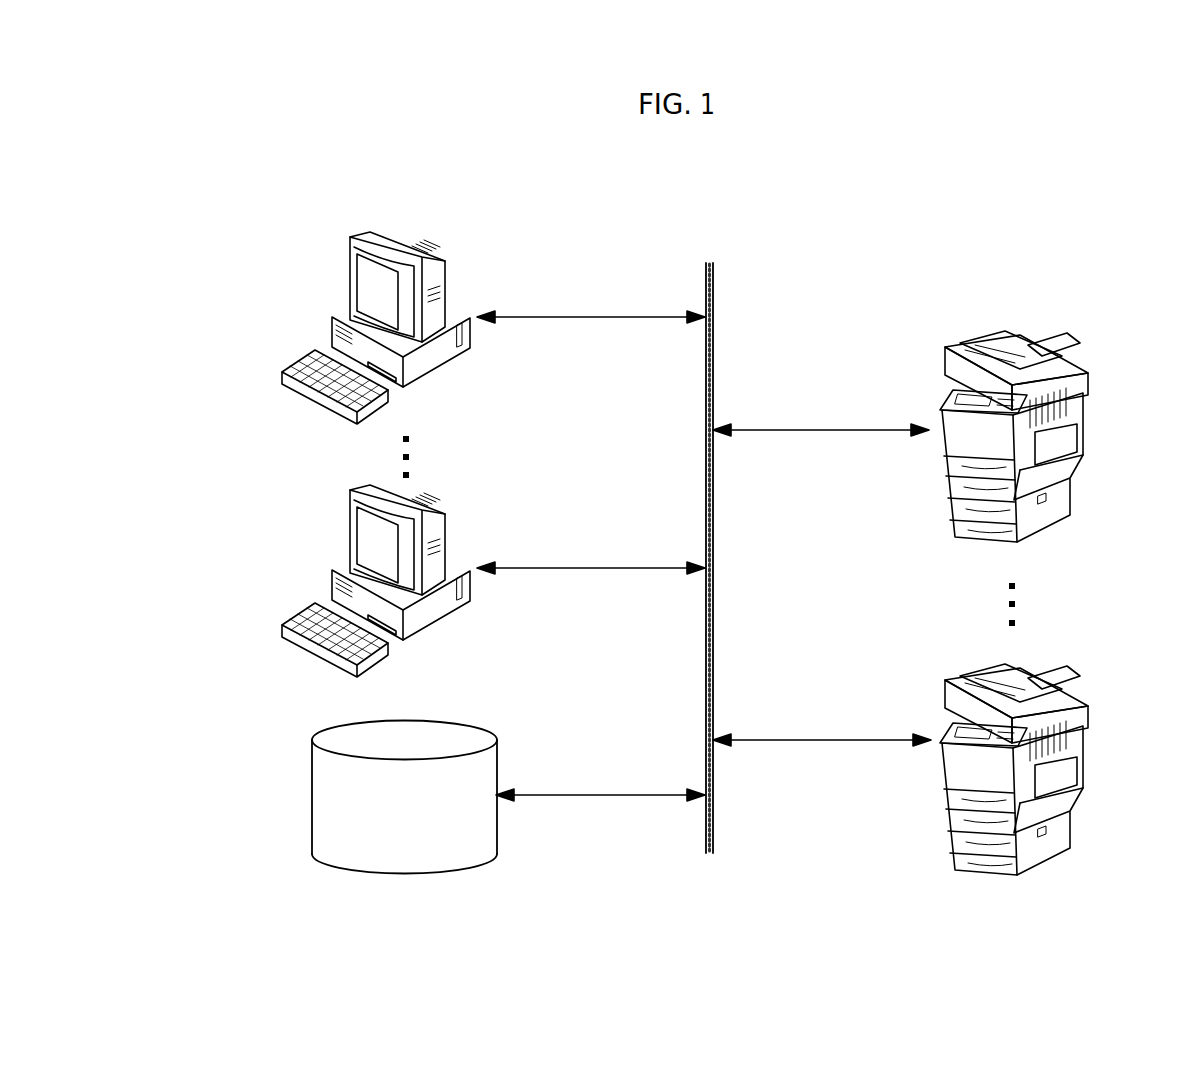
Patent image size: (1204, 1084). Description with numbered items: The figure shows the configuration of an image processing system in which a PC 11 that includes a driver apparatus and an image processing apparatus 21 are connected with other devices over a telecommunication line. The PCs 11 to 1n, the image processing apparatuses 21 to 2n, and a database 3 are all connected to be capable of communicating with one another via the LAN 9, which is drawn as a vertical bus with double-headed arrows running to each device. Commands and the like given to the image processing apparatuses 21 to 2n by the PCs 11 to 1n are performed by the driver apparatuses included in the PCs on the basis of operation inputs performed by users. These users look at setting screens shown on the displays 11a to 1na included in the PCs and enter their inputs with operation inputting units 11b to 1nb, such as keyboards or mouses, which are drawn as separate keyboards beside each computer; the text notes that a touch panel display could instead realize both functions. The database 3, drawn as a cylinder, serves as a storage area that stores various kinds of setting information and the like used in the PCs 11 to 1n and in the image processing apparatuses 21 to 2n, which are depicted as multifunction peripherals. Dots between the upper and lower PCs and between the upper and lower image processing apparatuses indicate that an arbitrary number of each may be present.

The PC 11 is at (348, 284).
The display 11a is at (360, 292).
The operation inputting unit 11b is at (310, 397).
The PC 1n is at (348, 537).
The display 1na is at (360, 544).
The operation inputting unit 1nb is at (310, 651).
The LAN 9 is at (713, 509).
The database 3 is at (312, 807).
The image processing apparatus 21 is at (1087, 433).
The image processing apparatus 2n is at (1092, 766).